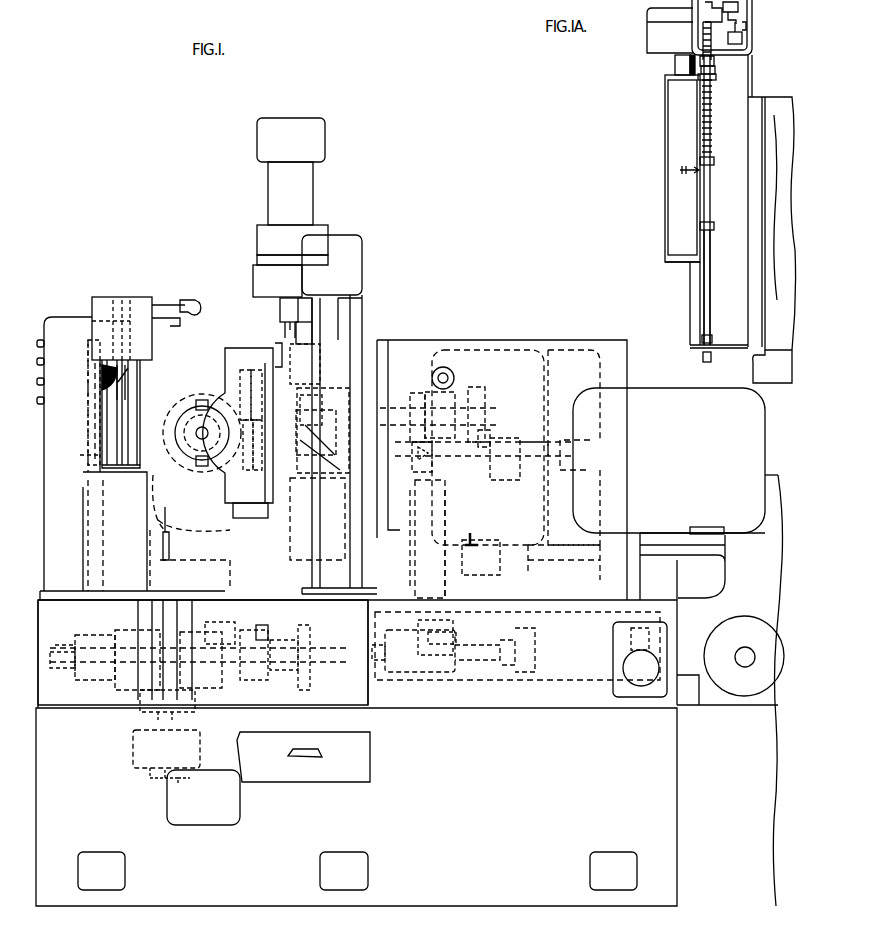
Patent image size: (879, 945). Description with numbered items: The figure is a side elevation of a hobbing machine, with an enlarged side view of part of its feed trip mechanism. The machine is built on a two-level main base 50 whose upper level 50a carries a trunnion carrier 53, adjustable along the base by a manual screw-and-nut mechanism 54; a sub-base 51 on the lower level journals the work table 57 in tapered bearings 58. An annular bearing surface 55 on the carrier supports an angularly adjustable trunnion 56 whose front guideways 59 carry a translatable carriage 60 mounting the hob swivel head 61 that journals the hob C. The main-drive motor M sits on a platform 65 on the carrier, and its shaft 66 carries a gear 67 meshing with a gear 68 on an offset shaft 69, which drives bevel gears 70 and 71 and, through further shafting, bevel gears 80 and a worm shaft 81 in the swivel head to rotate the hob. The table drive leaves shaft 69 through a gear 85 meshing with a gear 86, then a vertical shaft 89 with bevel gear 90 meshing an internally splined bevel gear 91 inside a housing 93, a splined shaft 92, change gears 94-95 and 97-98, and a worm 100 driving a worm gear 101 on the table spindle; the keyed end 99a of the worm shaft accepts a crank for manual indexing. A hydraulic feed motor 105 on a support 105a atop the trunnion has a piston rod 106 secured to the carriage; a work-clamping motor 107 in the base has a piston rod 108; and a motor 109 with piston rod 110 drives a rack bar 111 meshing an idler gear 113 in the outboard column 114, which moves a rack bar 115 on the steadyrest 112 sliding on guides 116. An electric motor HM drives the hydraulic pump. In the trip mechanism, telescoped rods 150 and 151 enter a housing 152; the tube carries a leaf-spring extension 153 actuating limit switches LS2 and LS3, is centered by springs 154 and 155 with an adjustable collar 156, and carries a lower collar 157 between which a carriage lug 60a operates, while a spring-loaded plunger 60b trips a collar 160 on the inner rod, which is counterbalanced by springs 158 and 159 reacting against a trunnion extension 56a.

In FIG. 1, the main base 50 is at (409, 690).
In FIG. 1, the upper level of main base 50a is at (521, 654).
In FIG. 1, the sub-base 51 is at (203, 652).
In FIG. 1, the trunnion carrier 53 is at (487, 340).
In FIG. 1A, the trunnion carrier 53 is at (782, 98).
In FIG. 1, the screw-and-nut mechanism 54 is at (570, 565).
In FIG. 1, the annular bearing surface 55 is at (418, 393).
In FIG. 1, the trunnion 56 is at (356, 330).
In FIG. 1A, the trunnion 56 is at (740, 86).
In FIG. 1A, the trunnion extension 56a is at (690, 345).
In FIG. 1, the work table 57 is at (190, 532).
In FIG. 1, the tapered bearings 58 is at (140, 616).
In FIG. 1, the guideways 59 is at (325, 322).
In FIG. 1A, the guideways 59 is at (694, 282).
In FIG. 1, the carriage 60 is at (293, 340).
In FIG. 1A, the carriage 60 is at (676, 103).
In FIG. 1A, the lug 60a is at (700, 78).
In FIG. 1A, the spring-loaded plunger 60b is at (693, 168).
In FIG. 1, the hob swivel head 61 is at (228, 362).
In FIG. 1, the platform 65 is at (718, 578).
In FIG. 1, the motor output shaft 66 is at (488, 468).
In FIG. 1, the gear 67 is at (483, 440).
In FIG. 1, the gear 68 is at (480, 397).
In FIG. 1, the offset shaft 69 is at (460, 402).
In FIG. 1, the bevel gear 70 is at (340, 410).
In FIG. 1, the bevel gear 71 is at (323, 416).
In FIG. 1, the bevel gears 80 is at (238, 372).
In FIG. 1, the worm shaft 81 is at (256, 370).
In FIG. 1, the gear 85 is at (420, 426).
In FIG. 1, the gear 86 is at (427, 455).
In FIG. 1, the vertical shaft 89 is at (428, 592).
In FIG. 1, the bevel gear 90 is at (446, 640).
In FIG. 1, the internally splined bevel gear 91 is at (426, 665).
In FIG. 1, the splined shaft 92 is at (344, 662).
In FIG. 1, the housing 93 is at (402, 672).
In FIG. 1, the change gears 94-95 is at (258, 626).
In FIG. 1, the change gears 97-98 is at (273, 663).
In FIG. 1, the keyed end of worm shaft 99a is at (55, 664).
In FIG. 1, the worm 100 is at (133, 672).
In FIG. 1, the worm gear 101 is at (230, 660).
In FIG. 1, the hydraulic motor 105 is at (308, 170).
In FIG. 1A, the support of hydraulic feed cylinder 105a is at (648, 40).
In FIG. 1, the piston rod 106 is at (287, 309).
In FIG. 1A, the piston rod 106 is at (676, 68).
In FIG. 1, the work-clamping hydraulic motor 107 is at (135, 760).
In FIG. 1, the piston rod 108 is at (178, 710).
In FIG. 1, the hydraulic motor 109 is at (80, 548).
In FIG. 1, the piston rod 110 is at (95, 459).
In FIG. 1, the rack bar 111 is at (90, 440).
In FIG. 1, the steadyrest 112 is at (143, 297).
In FIG. 1, the idler gear 113 is at (110, 395).
In FIG. 1, the outboard column 114 is at (66, 320).
In FIG. 1, the rack bar 115 is at (122, 404).
In FIG. 1, the guides 116 is at (127, 390).
In FIG. 1A, the rod 150 is at (712, 120).
In FIG. 1A, the inner rod 151 is at (712, 270).
In FIG. 1, the housing 152 is at (362, 243).
In FIG. 1A, the leaf-spring extension 153 is at (740, 20).
In FIG. 1A, the spring 154 is at (702, 35).
In FIG. 1A, the spring 155 is at (702, 58).
In FIG. 1A, the adjustable collar 156 is at (716, 70).
In FIG. 1A, the adjustable collar 157 is at (714, 160).
In FIG. 1A, the spring 158 is at (704, 338).
In FIG. 1A, the spring 159 is at (703, 360).
In FIG. 1A, the adjustable collar 160 is at (714, 226).
In FIG. 1, the hob C is at (200, 452).
In FIG. 1, the main-drive motor M is at (669, 460).
In FIG. 1, the electric motor HM is at (744, 656).
In FIG. 1A, the limit switch LS2 is at (742, 8).
In FIG. 1A, the limit switch LS3 is at (746, 40).